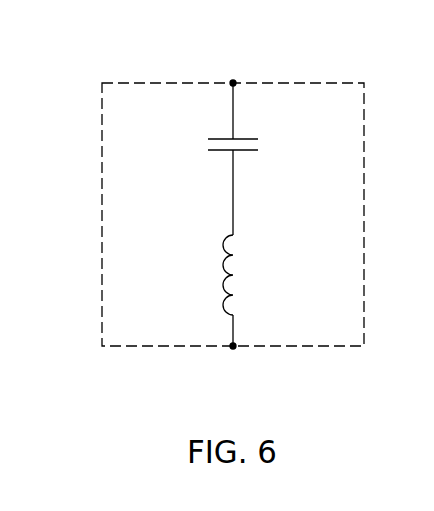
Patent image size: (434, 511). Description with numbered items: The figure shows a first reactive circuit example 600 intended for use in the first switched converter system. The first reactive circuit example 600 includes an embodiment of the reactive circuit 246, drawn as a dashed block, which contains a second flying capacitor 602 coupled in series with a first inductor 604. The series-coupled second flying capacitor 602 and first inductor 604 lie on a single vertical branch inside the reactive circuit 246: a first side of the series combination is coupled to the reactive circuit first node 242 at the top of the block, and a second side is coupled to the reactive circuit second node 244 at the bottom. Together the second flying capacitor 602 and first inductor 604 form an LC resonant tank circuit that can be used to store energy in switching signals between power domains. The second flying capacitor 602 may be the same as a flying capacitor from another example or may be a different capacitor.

The first reactive circuit example 600 is at (122, 35).
The reactive circuit first node 242 is at (233, 80).
The reactive circuit second node 244 is at (233, 349).
The reactive circuit 246 is at (281, 83).
The second flying capacitor 602 is at (243, 136).
The first inductor 604 is at (224, 241).